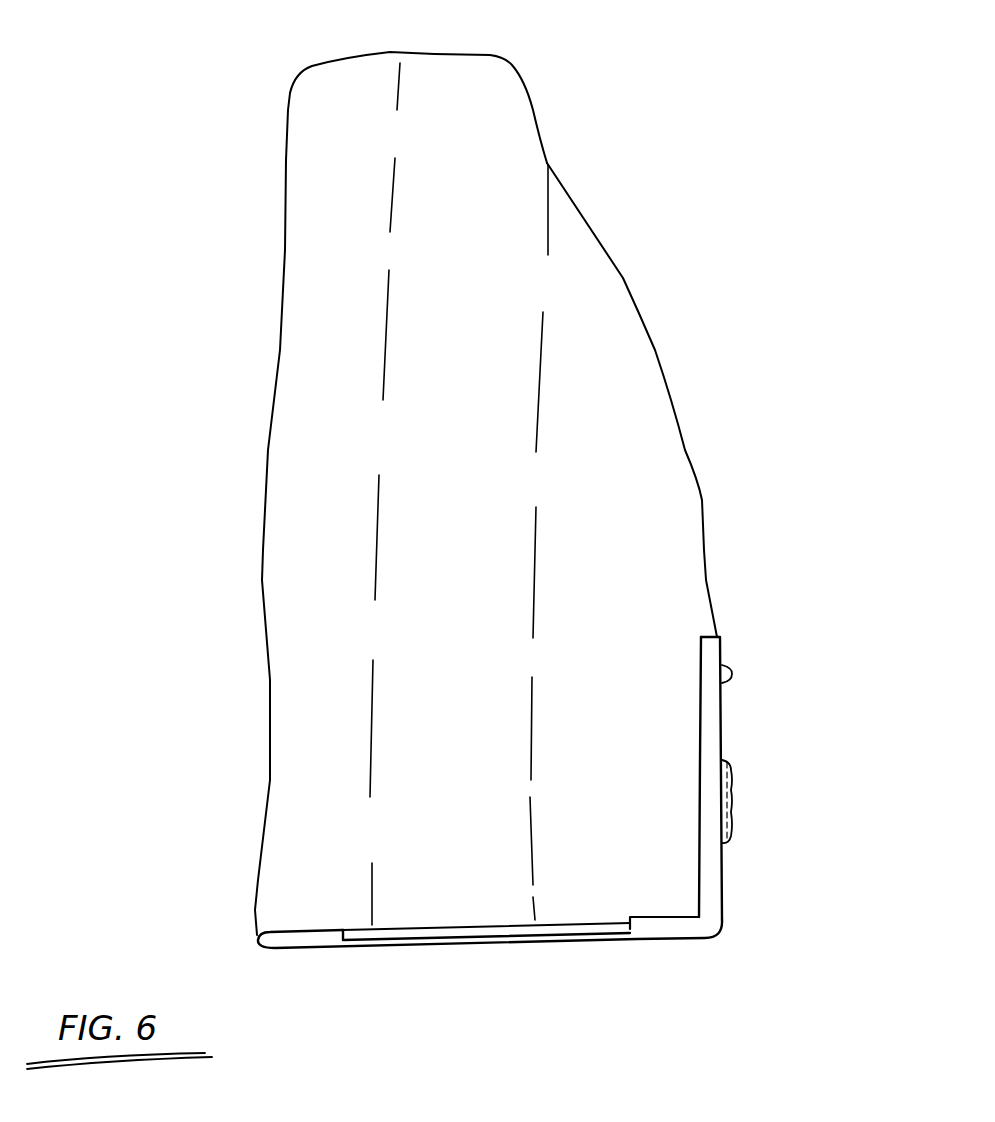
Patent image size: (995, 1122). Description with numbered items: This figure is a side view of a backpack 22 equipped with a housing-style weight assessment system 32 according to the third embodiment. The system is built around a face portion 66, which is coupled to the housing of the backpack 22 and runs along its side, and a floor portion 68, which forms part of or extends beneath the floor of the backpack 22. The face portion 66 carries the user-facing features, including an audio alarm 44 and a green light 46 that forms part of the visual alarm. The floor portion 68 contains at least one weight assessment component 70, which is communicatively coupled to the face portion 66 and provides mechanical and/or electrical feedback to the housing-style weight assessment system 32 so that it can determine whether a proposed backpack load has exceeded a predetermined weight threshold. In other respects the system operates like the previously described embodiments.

The backpack 22 is at (595, 162).
The housing-style weight assessment system 32 is at (554, 790).
The green light 46 is at (727, 663).
The face portion 66 is at (727, 720).
The audio alarm 44 is at (735, 790).
The weight assessment component 70 is at (455, 928).
The floor portion 68 is at (640, 932).